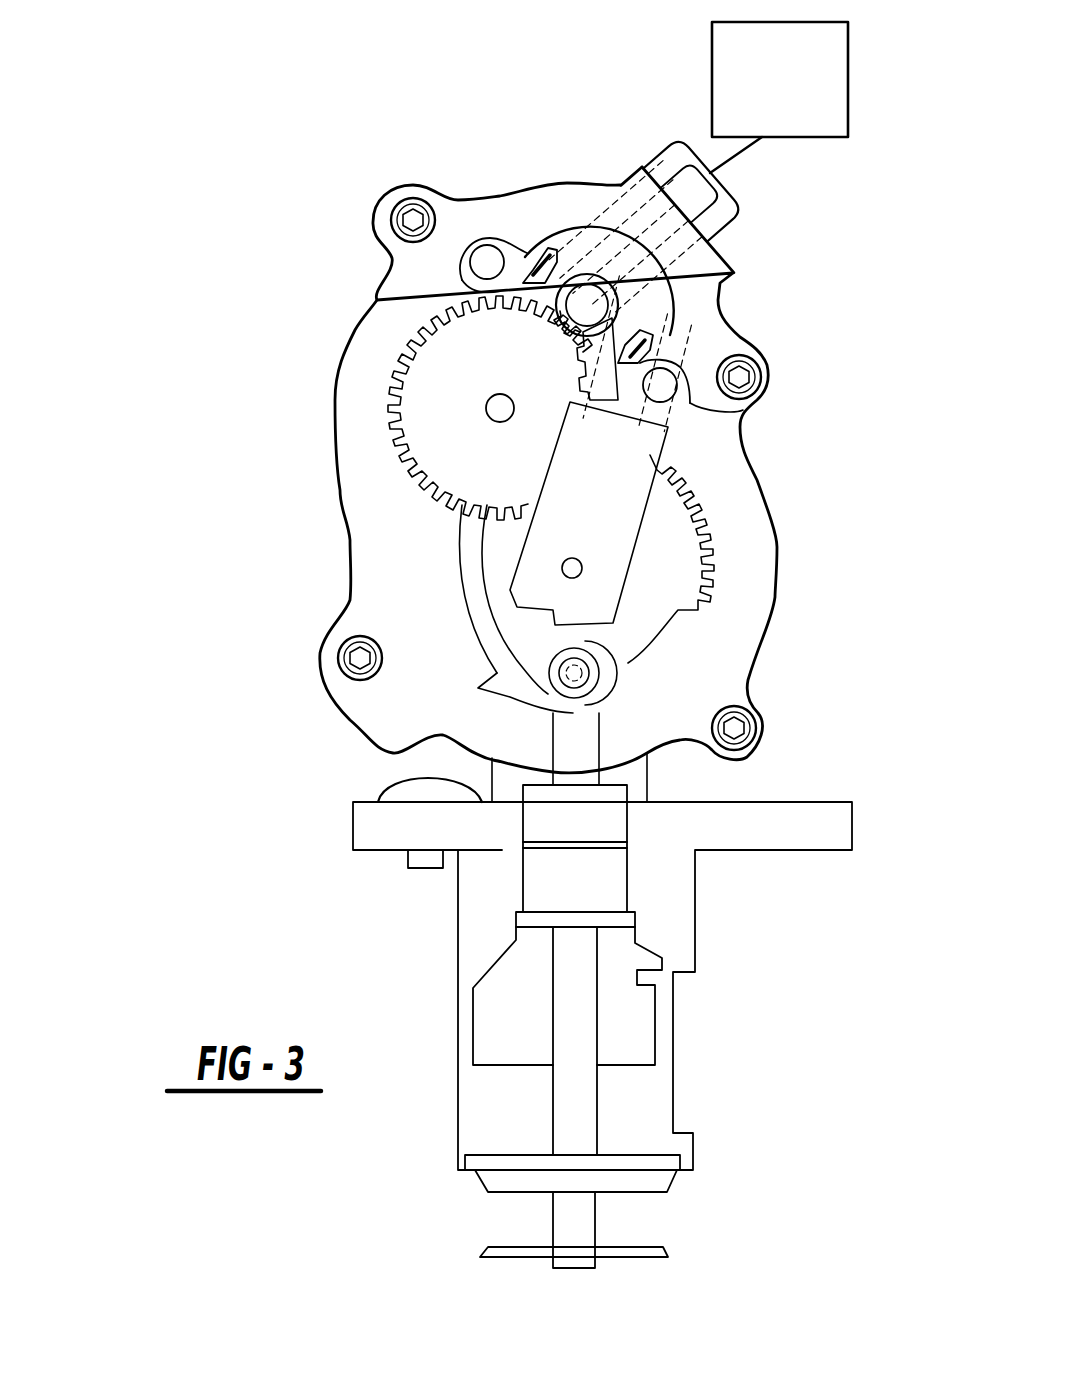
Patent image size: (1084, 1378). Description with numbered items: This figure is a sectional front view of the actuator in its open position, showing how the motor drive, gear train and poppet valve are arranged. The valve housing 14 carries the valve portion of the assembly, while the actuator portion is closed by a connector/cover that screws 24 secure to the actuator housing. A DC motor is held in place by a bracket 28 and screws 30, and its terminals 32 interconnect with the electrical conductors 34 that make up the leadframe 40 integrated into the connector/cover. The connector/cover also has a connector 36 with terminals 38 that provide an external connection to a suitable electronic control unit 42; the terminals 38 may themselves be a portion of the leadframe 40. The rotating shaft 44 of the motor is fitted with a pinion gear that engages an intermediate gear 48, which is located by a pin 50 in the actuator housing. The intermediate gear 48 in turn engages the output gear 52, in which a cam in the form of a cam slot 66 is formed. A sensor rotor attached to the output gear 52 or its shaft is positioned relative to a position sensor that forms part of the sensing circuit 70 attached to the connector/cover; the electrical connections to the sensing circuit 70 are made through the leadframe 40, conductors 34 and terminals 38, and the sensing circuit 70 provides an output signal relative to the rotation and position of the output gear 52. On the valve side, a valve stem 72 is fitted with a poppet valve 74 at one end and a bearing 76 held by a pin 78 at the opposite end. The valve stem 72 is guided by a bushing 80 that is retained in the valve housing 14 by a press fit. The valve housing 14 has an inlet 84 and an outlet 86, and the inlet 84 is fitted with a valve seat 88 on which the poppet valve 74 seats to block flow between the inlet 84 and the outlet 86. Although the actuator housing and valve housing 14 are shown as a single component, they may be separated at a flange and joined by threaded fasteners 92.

The valve housing 14 is at (475, 917).
The screws 24 is at (412, 220).
The bracket 28 is at (568, 222).
The screws 30 is at (485, 262).
The terminals 32 is at (540, 262).
The electrical conductors 34 is at (623, 373).
The connector 36 is at (632, 180).
The terminals 38 is at (728, 188).
The leadframe 40 is at (583, 390).
The electronic control unit 42 is at (712, 53).
The rotating shaft 44 is at (615, 303).
The intermediate gear 48 is at (388, 422).
The pin 50 is at (498, 422).
The output gear 52 is at (707, 518).
The cam slot 66 is at (482, 584).
The sensing circuit 70 is at (670, 437).
The valve stem 72 is at (597, 1218).
The poppet valve 74 is at (647, 1257).
The bearing 76 is at (567, 690).
The pin 78 is at (590, 673).
The bushing 80 is at (590, 883).
The inlet 84 is at (510, 1193).
The outlet 86 is at (673, 1065).
The valve seat 88 is at (693, 1167).
The threaded fasteners 92 is at (423, 785).